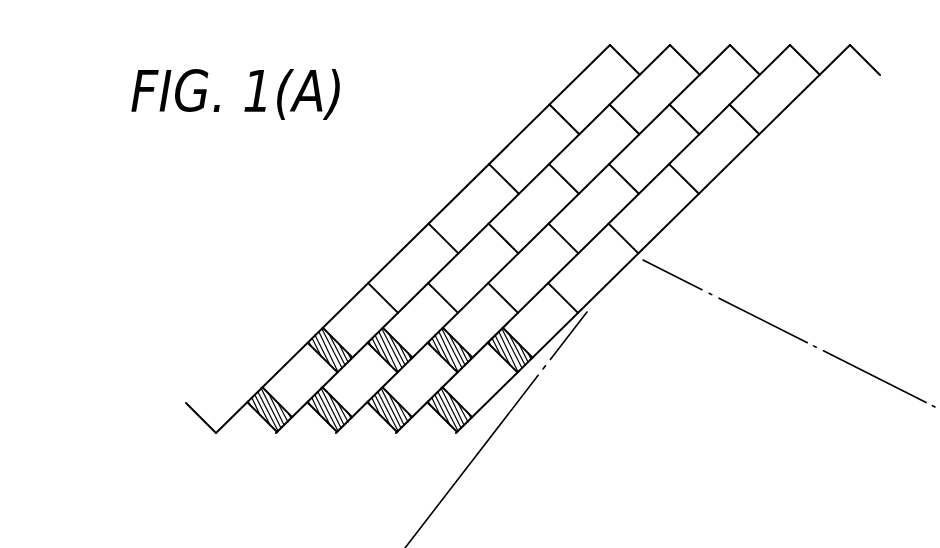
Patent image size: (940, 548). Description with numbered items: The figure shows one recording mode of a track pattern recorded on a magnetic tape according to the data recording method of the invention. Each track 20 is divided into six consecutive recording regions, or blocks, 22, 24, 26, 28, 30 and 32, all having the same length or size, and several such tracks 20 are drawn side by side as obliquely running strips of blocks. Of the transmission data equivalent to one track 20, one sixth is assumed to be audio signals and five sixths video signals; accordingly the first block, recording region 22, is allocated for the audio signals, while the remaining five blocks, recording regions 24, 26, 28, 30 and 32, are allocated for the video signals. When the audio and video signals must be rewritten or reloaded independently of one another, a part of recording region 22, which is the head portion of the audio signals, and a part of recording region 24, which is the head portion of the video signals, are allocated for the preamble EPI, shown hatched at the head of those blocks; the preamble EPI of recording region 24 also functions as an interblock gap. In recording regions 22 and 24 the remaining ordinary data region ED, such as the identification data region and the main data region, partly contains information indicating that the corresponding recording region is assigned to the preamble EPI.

The track 20 is at (626, 60).
The recording region 22 is at (301, 338).
The recording region 24 is at (362, 278).
The recording region 26 is at (422, 219).
The recording region 28 is at (483, 159).
The recording region 30 is at (543, 100).
The recording region 32 is at (604, 40).
The ordinary data region ED is at (287, 372).
The preamble EPI is at (345, 372).